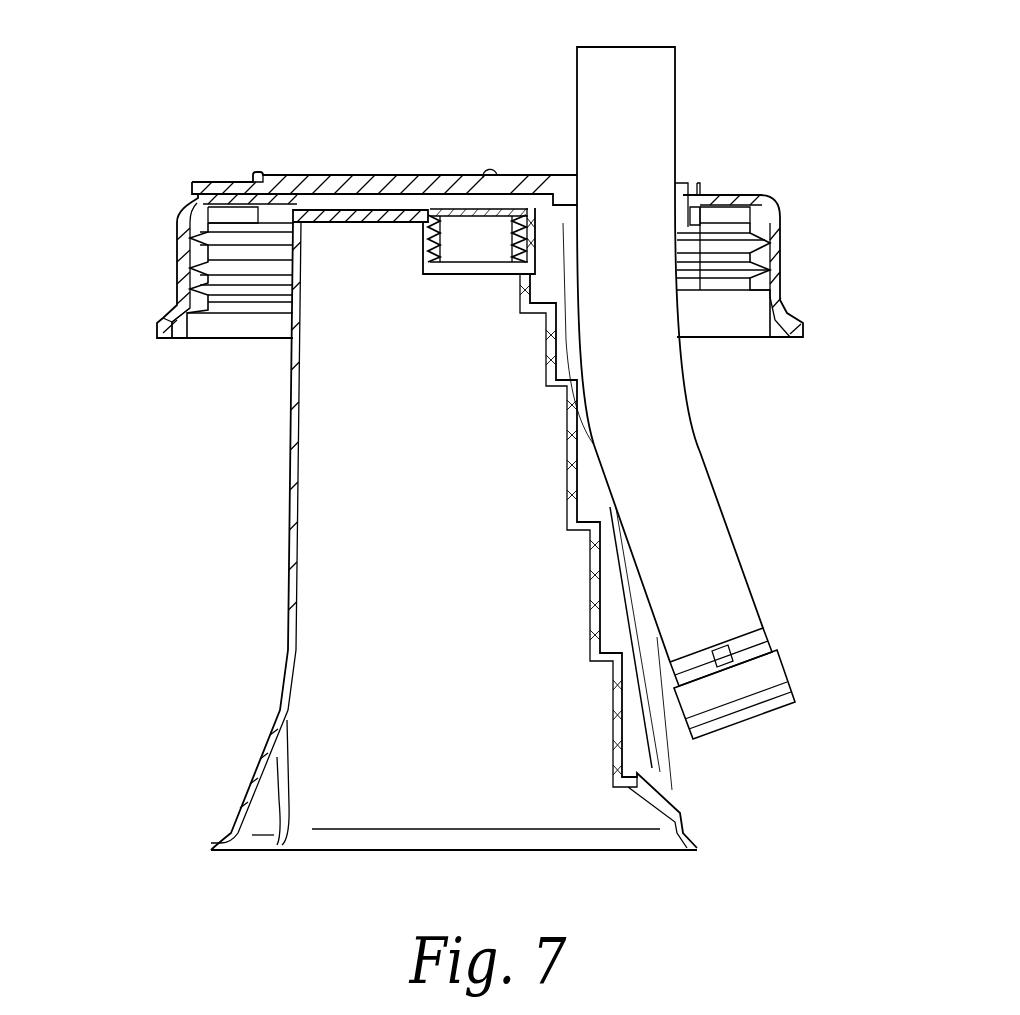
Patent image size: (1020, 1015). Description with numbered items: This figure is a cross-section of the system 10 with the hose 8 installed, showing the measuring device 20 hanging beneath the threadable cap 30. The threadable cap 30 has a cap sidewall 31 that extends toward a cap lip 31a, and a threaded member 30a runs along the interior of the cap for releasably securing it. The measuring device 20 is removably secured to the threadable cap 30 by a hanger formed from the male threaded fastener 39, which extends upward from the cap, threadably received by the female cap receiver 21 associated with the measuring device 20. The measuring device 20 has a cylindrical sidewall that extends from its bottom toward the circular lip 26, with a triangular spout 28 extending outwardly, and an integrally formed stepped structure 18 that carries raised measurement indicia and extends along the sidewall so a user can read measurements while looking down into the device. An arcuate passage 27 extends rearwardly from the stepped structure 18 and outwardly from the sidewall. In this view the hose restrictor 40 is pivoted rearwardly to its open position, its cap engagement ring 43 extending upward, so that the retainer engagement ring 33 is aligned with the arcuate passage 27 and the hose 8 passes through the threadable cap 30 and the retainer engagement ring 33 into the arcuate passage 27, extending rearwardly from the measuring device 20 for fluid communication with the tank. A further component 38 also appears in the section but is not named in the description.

The system 10 is at (104, 74).
The hose restrictor 40 is at (201, 165).
The cap engagement ring 43 is at (252, 174).
The cap receiver 21 is at (428, 250).
The seal 38 is at (512, 215).
The threaded fastener 39 is at (517, 214).
The retainer engagement ring 33 is at (700, 188).
The threadable cap 30 is at (117, 239).
The cap sidewall 31 is at (781, 246).
The cap lip 31a is at (157, 335).
The threaded member 30a is at (245, 283).
The hose 8 is at (690, 448).
The stepped structure 18 is at (572, 533).
The measuring device 20 is at (326, 544).
The triangular spout 28 is at (262, 803).
The arcuate passage 27 is at (655, 742).
The circular lip 26 is at (317, 844).